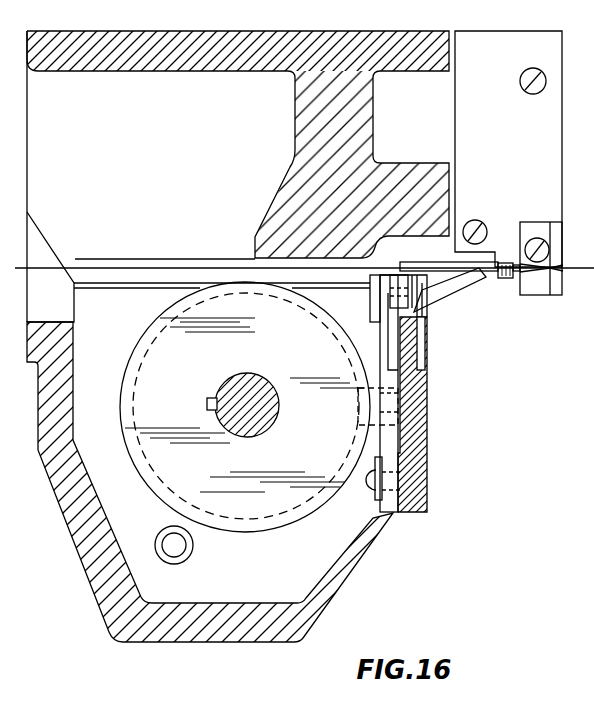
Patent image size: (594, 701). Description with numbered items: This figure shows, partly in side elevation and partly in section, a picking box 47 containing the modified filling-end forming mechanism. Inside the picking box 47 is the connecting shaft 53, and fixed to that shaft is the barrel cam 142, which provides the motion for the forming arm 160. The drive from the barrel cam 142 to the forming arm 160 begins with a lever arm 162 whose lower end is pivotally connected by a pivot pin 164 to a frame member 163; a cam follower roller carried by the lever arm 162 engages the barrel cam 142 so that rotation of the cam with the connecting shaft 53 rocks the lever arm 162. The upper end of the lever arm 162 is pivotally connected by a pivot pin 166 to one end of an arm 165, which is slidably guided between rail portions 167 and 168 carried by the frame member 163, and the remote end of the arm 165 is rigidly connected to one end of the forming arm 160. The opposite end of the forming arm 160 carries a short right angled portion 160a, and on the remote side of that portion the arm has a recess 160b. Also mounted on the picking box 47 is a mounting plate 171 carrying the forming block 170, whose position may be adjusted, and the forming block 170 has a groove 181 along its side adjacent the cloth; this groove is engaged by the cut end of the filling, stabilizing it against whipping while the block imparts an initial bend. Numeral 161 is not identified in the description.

The picking box 47 is at (146, 120).
The connecting shaft 53 is at (248, 373).
The barrel cam 142 is at (243, 532).
The forming arm 160 is at (497, 277).
The short right angled portion 160a is at (508, 262).
The recess 160b is at (506, 280).
The opening 161 is at (358, 404).
The lever arm 162 is at (393, 512).
The frame member 163 is at (428, 410).
The pivot pin 164 is at (428, 477).
The arm 165 is at (398, 277).
The pivot pin 166 is at (410, 300).
The rail portion 167 is at (370, 302).
The rail portion 168 is at (446, 300).
The forming block 170 is at (549, 295).
The mounting plate 171 is at (488, 147).
The groove 181 is at (551, 268).